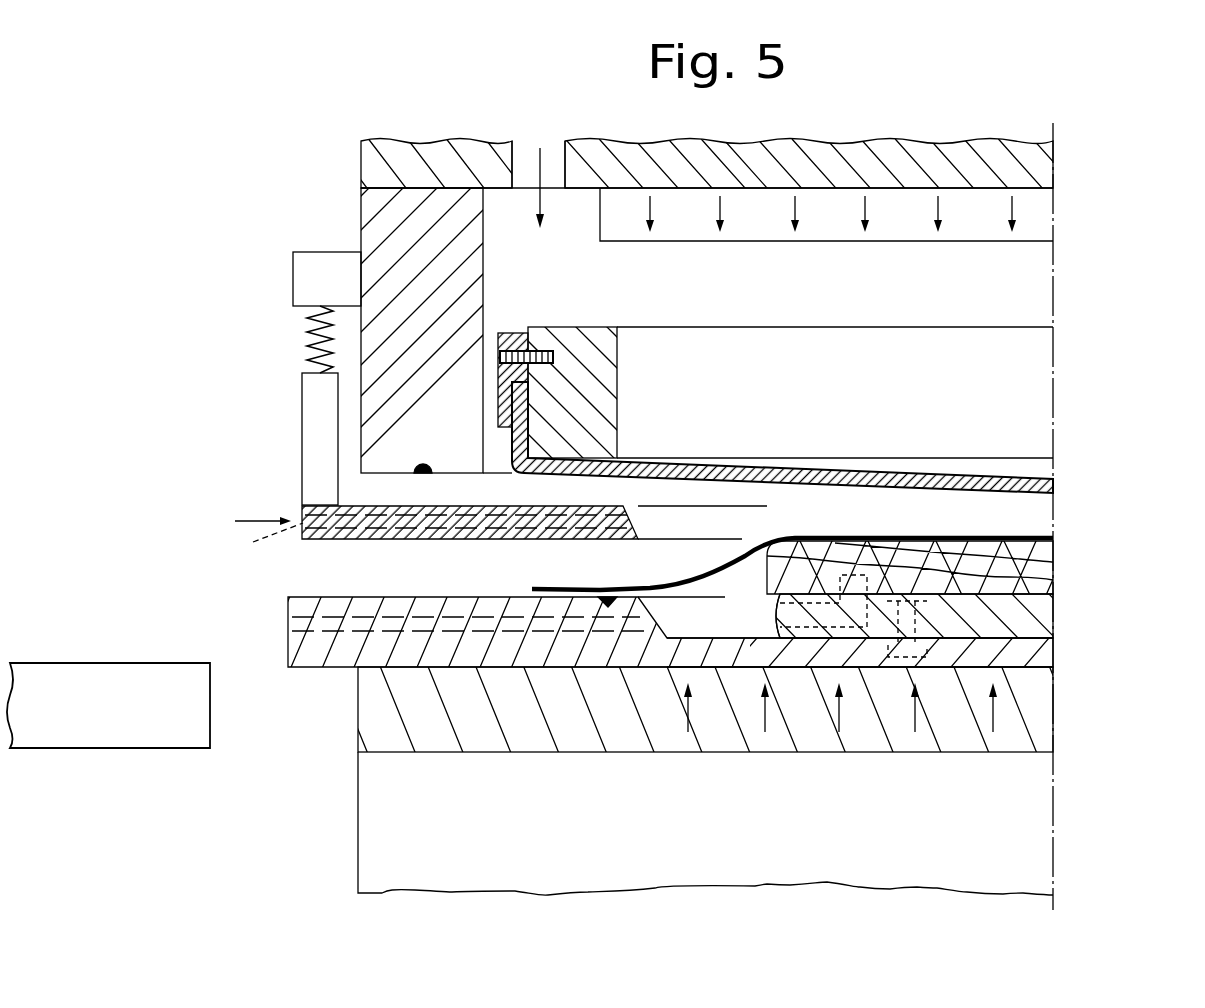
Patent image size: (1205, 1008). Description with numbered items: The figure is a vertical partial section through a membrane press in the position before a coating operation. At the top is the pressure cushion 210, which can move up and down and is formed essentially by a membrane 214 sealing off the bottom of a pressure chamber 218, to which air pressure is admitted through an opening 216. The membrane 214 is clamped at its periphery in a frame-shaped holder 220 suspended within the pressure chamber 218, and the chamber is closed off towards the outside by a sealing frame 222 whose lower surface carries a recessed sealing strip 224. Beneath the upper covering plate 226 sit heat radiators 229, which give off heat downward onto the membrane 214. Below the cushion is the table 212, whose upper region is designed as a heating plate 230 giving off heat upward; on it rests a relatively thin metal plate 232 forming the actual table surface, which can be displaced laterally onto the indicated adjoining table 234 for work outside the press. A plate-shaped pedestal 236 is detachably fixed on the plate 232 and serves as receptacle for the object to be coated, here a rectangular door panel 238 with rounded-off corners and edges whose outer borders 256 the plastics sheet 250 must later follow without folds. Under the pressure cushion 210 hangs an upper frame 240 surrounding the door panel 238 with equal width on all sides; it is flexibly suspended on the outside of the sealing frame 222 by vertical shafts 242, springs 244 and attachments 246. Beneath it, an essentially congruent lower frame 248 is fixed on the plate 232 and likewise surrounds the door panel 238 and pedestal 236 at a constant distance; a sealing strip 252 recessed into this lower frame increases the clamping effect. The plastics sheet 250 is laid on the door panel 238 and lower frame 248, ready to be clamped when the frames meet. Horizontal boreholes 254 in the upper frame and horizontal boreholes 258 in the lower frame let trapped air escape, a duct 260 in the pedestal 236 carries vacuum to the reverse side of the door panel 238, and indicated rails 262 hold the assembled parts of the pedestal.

The pressure cushion 210 is at (1082, 292).
The table 212 is at (373, 835).
The membrane 214 is at (1053, 482).
The opening 216 is at (525, 156).
The pressure chamber 218 is at (854, 290).
The holder 220 is at (574, 333).
The sealing frame 222 is at (375, 207).
The sealing strip 224 is at (418, 472).
The upper covering plate 226 is at (1053, 153).
The heat radiators 229 is at (1043, 206).
The heating plate 230 is at (370, 708).
The plate 232 is at (1040, 650).
The adjoining table 234 is at (115, 735).
The pedestal 236 is at (1040, 610).
The door panel 238 is at (1043, 570).
The frame 240 is at (437, 539).
The vertical shafts 242 is at (313, 407).
The springs 244 is at (307, 327).
The attachments 246 is at (302, 279).
The lower frame 248 is at (333, 600).
The plastics sheet 250 is at (1043, 521).
The seal 252 is at (607, 606).
The horizontal boreholes 254 is at (251, 536).
The outer borders 256 is at (767, 578).
The horizontal boreholes 258 is at (300, 615).
The duct 260 is at (802, 617).
The rails 262 is at (907, 655).